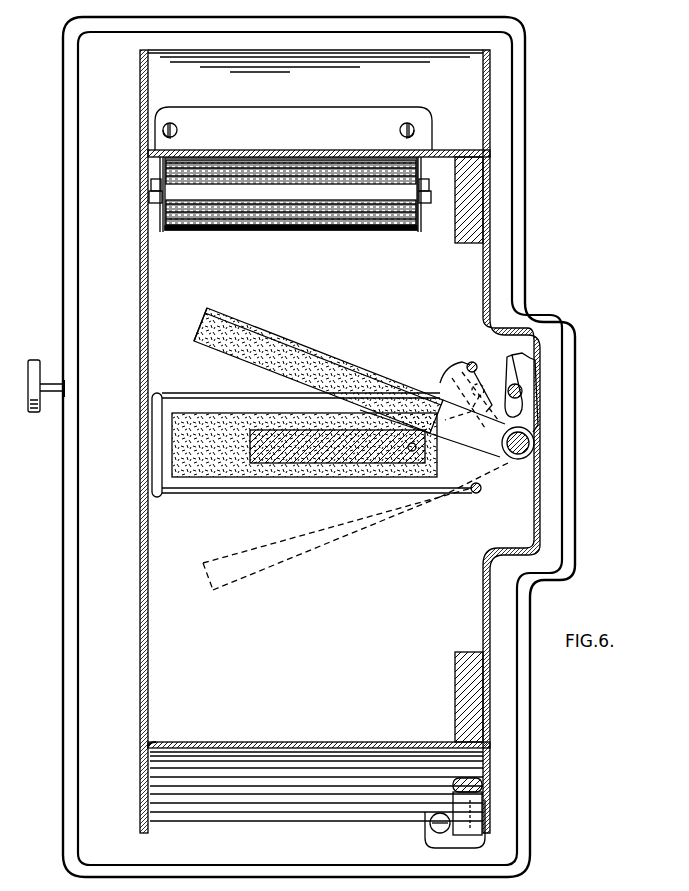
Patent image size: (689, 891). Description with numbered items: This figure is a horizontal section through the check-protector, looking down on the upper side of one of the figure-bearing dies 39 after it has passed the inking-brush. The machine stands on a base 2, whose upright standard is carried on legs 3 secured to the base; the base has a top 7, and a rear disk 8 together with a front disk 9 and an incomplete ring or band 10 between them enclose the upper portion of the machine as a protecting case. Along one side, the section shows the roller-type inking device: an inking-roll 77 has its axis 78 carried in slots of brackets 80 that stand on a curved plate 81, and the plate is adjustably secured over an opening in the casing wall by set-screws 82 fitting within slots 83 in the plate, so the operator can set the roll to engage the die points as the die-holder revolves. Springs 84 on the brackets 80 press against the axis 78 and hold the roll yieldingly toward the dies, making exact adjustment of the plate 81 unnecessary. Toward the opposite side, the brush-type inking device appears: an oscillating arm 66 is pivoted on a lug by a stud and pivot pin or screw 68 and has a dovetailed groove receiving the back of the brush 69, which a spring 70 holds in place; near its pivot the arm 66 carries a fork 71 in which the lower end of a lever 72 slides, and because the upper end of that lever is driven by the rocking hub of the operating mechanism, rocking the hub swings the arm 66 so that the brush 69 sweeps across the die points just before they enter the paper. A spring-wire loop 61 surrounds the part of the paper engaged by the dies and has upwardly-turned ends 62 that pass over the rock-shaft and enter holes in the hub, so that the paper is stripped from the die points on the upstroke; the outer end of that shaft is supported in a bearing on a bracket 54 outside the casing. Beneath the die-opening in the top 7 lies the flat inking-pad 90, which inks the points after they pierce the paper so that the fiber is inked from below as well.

The base 2 is at (505, 178).
The legs 3 is at (465, 240).
The top 7 is at (82, 478).
The disk 8 is at (483, 315).
The disk 9 is at (140, 349).
The incomplete ring or band 10 is at (275, 76).
The dies 39 is at (285, 463).
The bracket 54 is at (465, 832).
The loop 61 is at (212, 494).
The upwardly-turned ends 62 is at (468, 362).
The oscillating arm 66 is at (502, 485).
The pivot pin or screw 68 is at (535, 443).
The brush 69 is at (283, 347).
The spring 70 is at (202, 318).
The fork 71 is at (530, 378).
The lever 72 is at (522, 394).
The inking-roll 77 is at (300, 232).
The axis 78 is at (150, 200).
The brackets 80 is at (161, 228).
The curved plate 81 is at (238, 152).
The set-screws 82 is at (178, 130).
The slots 83 is at (172, 136).
The springs 84 is at (151, 186).
The inking-pad 90 is at (200, 428).